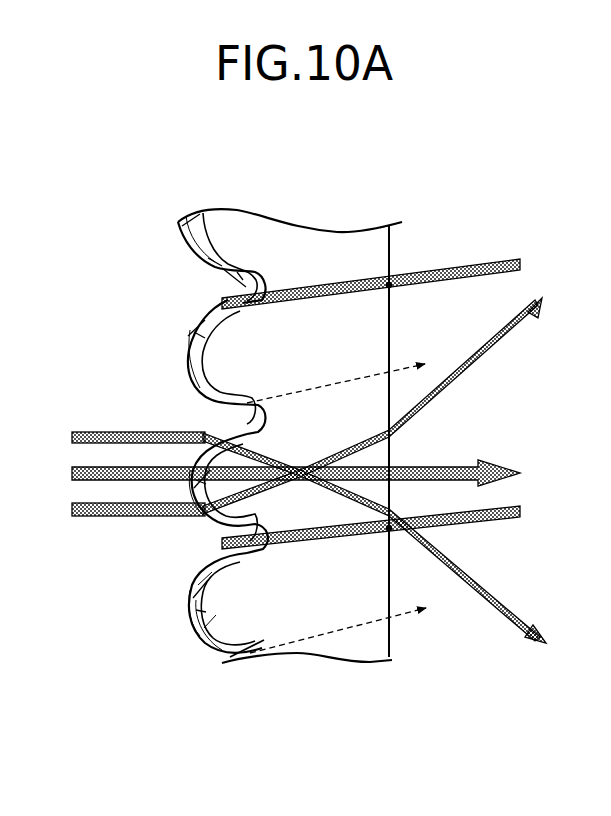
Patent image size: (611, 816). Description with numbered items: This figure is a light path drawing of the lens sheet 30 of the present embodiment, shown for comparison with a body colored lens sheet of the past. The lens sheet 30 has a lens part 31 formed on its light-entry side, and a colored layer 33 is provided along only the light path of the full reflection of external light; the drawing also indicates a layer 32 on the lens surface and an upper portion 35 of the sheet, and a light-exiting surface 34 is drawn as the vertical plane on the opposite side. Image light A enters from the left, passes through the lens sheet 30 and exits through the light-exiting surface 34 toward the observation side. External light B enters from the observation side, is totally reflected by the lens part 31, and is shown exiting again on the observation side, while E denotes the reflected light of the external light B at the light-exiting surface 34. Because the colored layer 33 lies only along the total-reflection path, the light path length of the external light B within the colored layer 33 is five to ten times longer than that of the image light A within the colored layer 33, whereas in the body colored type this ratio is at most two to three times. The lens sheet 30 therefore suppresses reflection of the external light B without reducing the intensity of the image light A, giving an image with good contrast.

The lens sheet 30 is at (328, 672).
The Fresnel lens surface 31 is at (172, 576).
The thin film sheet 32 is at (188, 619).
The colored layer 33 is at (207, 641).
The light-exiting surface 34 is at (396, 636).
The lens upper portion 35 is at (377, 240).
The image light A is at (76, 427).
The external light B is at (473, 260).
The reflected light E is at (409, 291).